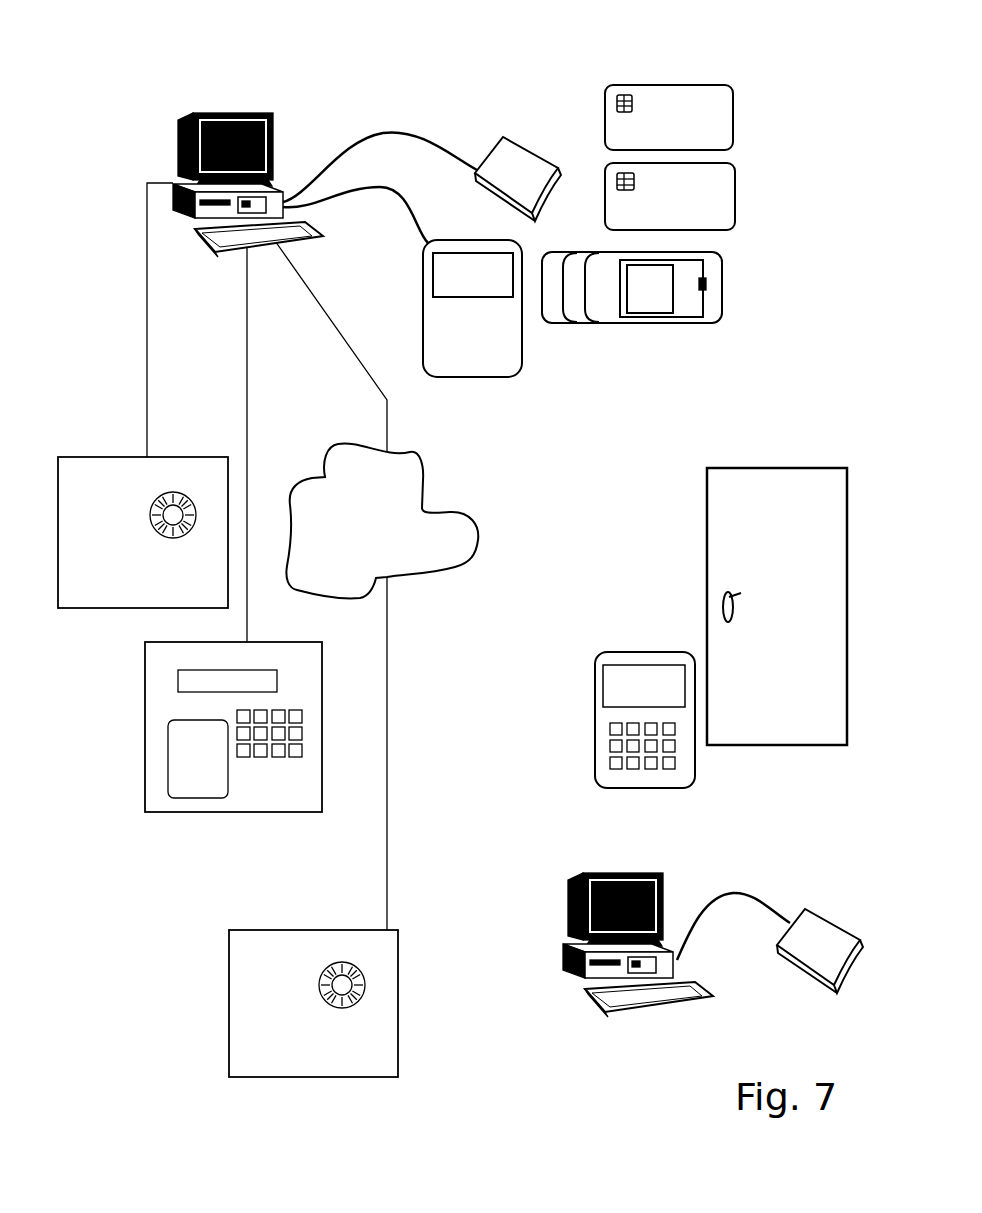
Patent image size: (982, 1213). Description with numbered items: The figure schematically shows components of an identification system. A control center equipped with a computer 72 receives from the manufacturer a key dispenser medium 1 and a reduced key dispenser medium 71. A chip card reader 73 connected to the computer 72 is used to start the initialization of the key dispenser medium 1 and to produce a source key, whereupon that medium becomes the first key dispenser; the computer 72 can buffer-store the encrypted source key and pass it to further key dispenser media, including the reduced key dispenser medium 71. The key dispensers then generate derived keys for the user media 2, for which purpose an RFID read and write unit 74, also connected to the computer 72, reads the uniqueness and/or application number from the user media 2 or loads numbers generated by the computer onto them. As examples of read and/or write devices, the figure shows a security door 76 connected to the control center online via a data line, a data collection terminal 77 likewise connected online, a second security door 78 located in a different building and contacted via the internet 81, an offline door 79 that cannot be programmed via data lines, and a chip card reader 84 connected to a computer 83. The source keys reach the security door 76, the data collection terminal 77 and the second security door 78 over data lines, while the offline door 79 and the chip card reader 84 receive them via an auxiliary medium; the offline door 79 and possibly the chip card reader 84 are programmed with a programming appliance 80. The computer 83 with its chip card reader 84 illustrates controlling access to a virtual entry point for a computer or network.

The key dispenser medium 1 is at (694, 75).
The reduced key dispenser medium 71 is at (741, 180).
The user media 2 is at (739, 283).
The computer 72 is at (270, 115).
The chip card reader 73 is at (517, 167).
The RFID read and write unit 74 is at (503, 340).
The security door 76 is at (92, 593).
The data collection terminal 77 is at (265, 792).
The second security door 78 is at (385, 950).
The offline door 79 is at (726, 597).
The programming appliance 80 is at (687, 758).
The internet 81 is at (408, 513).
The computer 83 is at (587, 987).
The chip card reader 84 is at (813, 950).